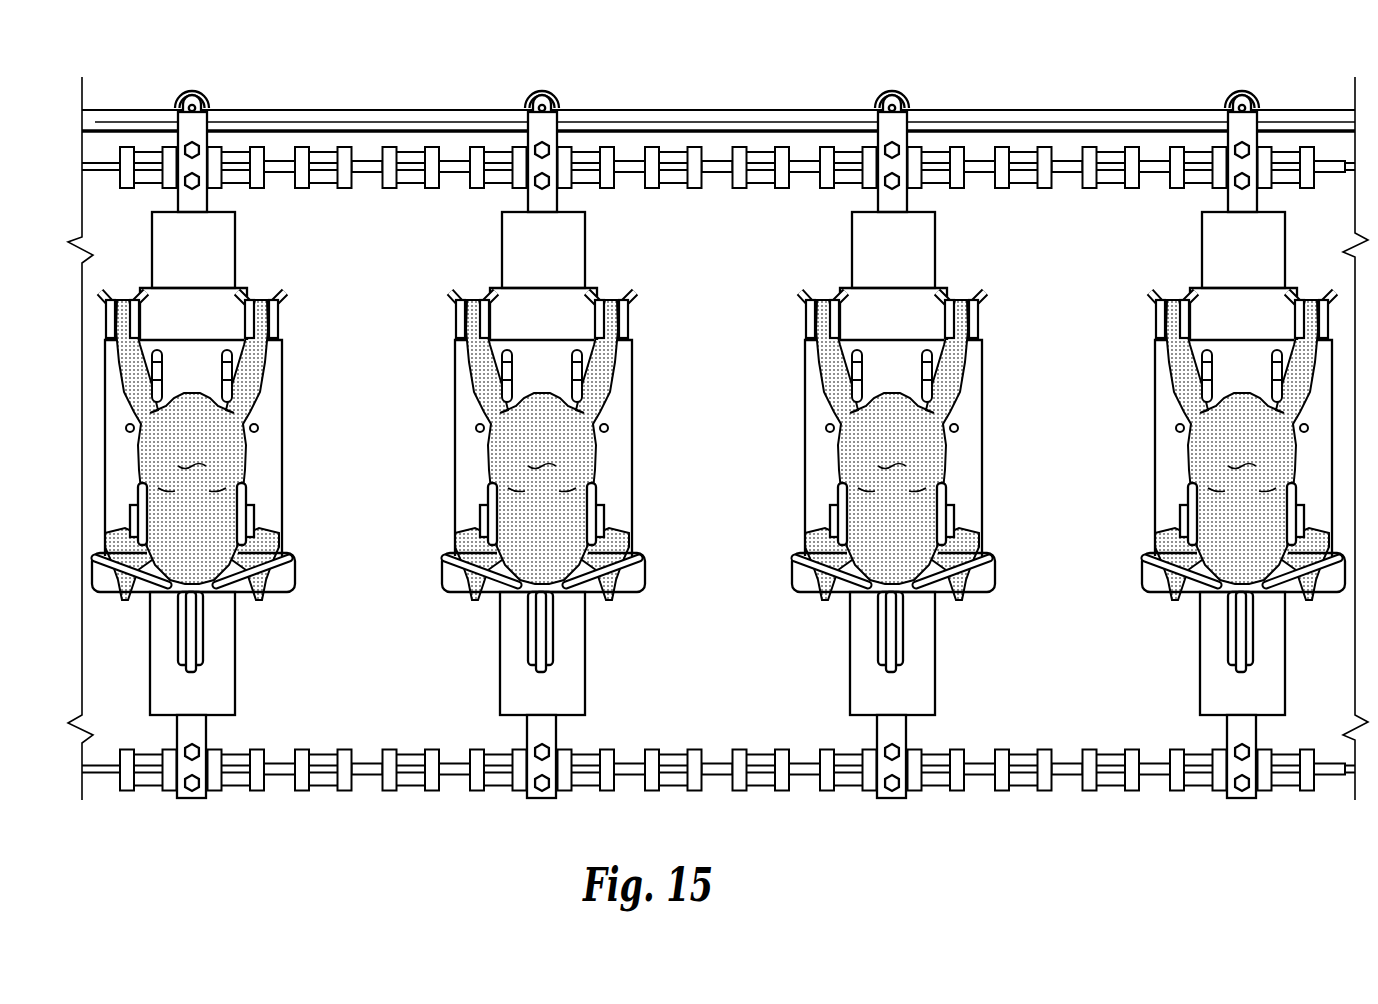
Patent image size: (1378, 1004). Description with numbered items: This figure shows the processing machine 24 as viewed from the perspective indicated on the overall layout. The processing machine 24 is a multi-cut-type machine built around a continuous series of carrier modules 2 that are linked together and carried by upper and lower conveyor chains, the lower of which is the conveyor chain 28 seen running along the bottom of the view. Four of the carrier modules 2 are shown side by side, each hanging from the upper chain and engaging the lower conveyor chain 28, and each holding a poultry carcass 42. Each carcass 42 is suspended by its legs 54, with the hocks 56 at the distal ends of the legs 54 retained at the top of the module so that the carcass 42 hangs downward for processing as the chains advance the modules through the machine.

The carrier module 2 is at (718, 444).
The processing machine 24 is at (703, 98).
The lower conveyor chain 28 is at (738, 747).
The carcass 42 is at (717, 450).
The legs 54 is at (717, 374).
The hocks 56 is at (717, 277).